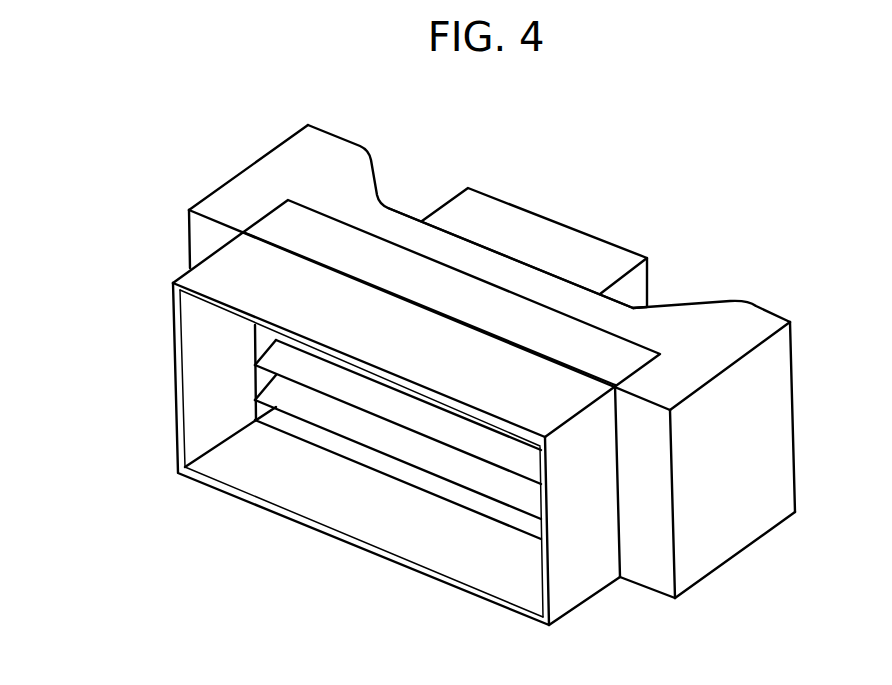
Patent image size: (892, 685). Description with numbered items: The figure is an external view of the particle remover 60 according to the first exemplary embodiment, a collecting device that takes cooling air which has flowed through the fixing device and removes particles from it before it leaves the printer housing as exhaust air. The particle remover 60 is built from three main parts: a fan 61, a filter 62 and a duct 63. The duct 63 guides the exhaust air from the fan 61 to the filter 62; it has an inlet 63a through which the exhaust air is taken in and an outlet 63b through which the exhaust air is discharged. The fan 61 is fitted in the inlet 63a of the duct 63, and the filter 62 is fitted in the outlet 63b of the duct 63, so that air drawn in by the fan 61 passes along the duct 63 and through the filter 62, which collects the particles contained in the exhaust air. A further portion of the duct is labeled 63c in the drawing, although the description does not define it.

The particle remover 60 is at (178, 172).
The fan 61 is at (603, 238).
The filter 62 is at (323, 230).
The duct 63 is at (703, 288).
The inlet 63a is at (472, 218).
The outlet 63b is at (437, 534).
The upper surface portion of blower unit 63c is at (503, 273).